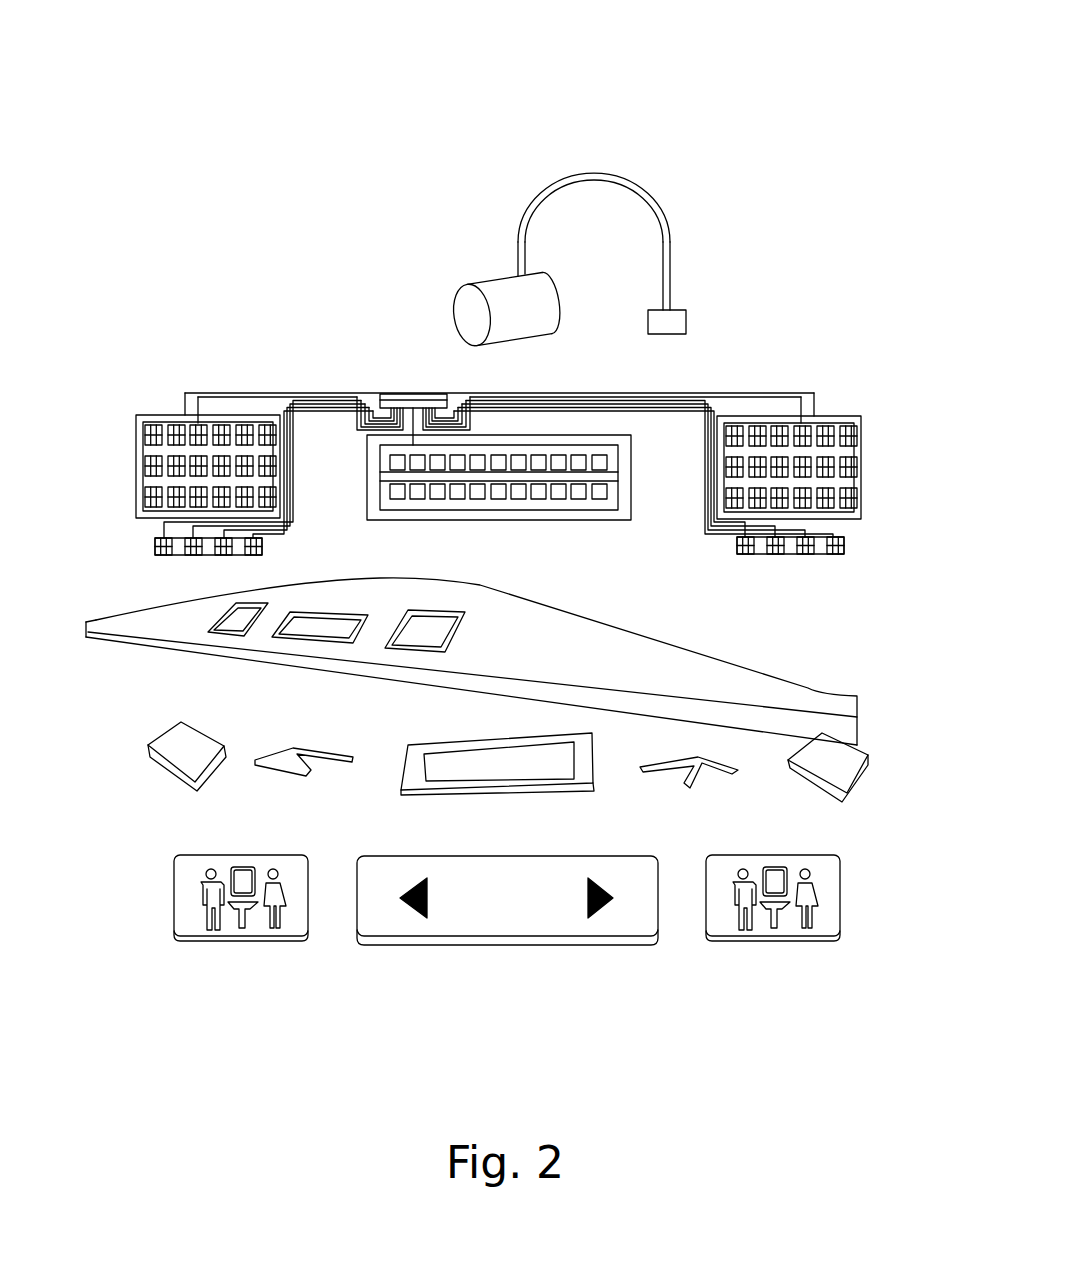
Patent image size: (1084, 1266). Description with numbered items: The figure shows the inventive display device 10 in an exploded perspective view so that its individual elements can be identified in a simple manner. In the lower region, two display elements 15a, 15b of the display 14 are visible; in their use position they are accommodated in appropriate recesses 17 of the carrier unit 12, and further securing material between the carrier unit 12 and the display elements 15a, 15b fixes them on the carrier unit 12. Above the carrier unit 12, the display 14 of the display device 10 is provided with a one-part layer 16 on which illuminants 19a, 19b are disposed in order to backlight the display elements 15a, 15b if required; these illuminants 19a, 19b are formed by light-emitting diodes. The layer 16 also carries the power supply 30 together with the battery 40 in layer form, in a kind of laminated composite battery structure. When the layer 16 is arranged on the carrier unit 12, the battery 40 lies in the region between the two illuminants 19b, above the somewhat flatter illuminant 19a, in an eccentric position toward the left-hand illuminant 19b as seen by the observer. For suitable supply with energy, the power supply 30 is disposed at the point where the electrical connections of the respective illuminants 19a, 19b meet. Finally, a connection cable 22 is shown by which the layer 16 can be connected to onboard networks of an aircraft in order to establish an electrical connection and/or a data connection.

The display device 10 is at (760, 84).
The carrier unit 12 is at (471, 631).
The display 14 is at (499, 695).
The display element 15a is at (514, 945).
The display element 15b is at (778, 945).
The one-part layer 16 is at (786, 326).
The recesses 17 is at (325, 625).
The illuminant 19a is at (605, 521).
The illuminants 19b is at (135, 467).
The connection cable 22 is at (593, 170).
The power supply 30 is at (498, 433).
The battery 40 is at (411, 393).